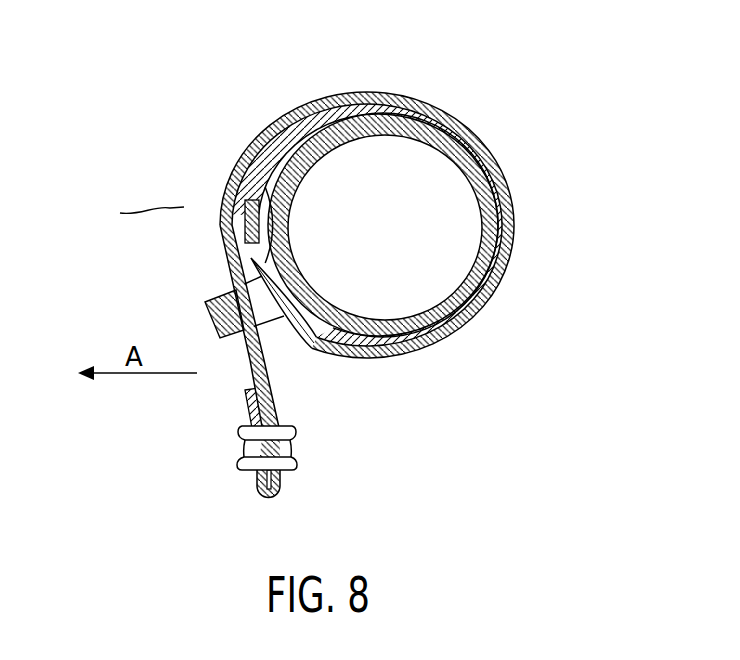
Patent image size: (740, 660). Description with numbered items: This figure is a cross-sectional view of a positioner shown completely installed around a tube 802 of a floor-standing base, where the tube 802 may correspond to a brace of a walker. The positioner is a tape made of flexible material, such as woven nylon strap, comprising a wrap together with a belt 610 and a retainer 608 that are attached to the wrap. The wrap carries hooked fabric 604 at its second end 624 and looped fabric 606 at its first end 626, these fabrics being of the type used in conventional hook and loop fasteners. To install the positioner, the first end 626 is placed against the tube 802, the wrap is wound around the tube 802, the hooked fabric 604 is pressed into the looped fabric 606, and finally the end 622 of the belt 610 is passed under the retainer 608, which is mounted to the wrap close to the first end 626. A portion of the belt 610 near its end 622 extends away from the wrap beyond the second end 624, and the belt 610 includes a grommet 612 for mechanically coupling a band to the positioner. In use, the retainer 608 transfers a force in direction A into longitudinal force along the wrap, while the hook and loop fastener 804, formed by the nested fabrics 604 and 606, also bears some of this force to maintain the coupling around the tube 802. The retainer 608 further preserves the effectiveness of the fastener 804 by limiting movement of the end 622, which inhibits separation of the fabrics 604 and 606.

The belt 610 is at (452, 108).
The looped fabric 606 is at (236, 168).
The first end 626 is at (270, 193).
The second end 624 is at (232, 250).
The hooked fabric 604 is at (228, 272).
The retainer 608 is at (206, 303).
The grommet 612 is at (240, 437).
The end 622 is at (262, 500).
The tube 802 is at (470, 184).
The hook and loop fastener 804 is at (184, 207).